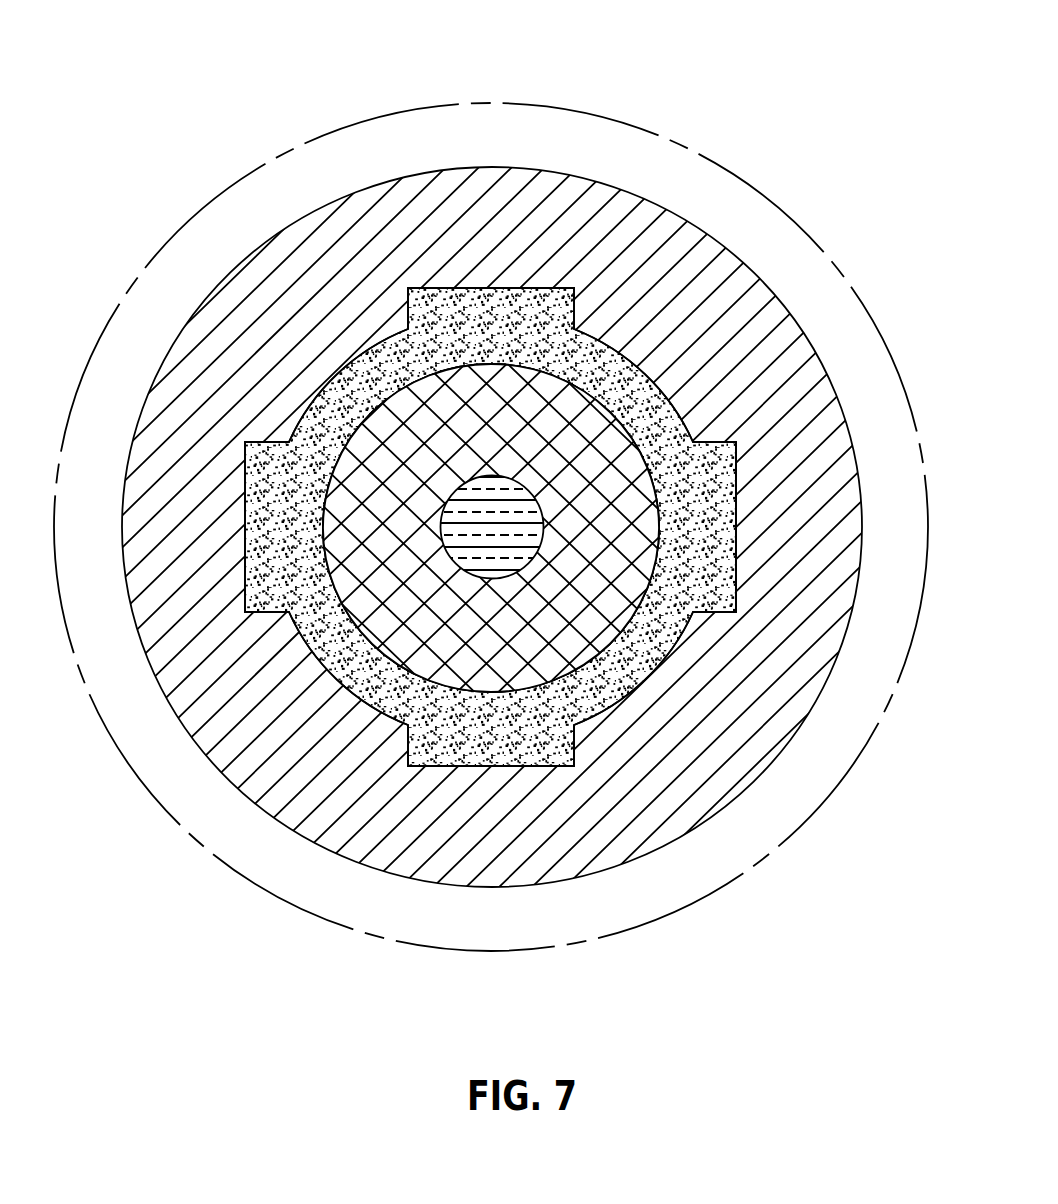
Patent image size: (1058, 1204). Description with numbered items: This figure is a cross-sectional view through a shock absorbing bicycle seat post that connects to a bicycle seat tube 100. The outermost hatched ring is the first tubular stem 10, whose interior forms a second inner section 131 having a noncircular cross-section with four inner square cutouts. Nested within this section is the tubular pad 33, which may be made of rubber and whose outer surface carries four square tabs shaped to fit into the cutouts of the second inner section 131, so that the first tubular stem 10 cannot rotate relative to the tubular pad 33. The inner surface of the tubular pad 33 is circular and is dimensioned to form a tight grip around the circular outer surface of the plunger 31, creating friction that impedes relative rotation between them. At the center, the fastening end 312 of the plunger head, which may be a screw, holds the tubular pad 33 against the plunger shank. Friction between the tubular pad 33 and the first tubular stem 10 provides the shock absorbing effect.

The bicycle seat tube 100 is at (197, 214).
The first tubular stem 10 is at (497, 195).
The tubular pad 33 is at (628, 378).
The plunger 31 is at (512, 423).
The fastening end 312 is at (473, 527).
The second inner section 131 is at (742, 450).